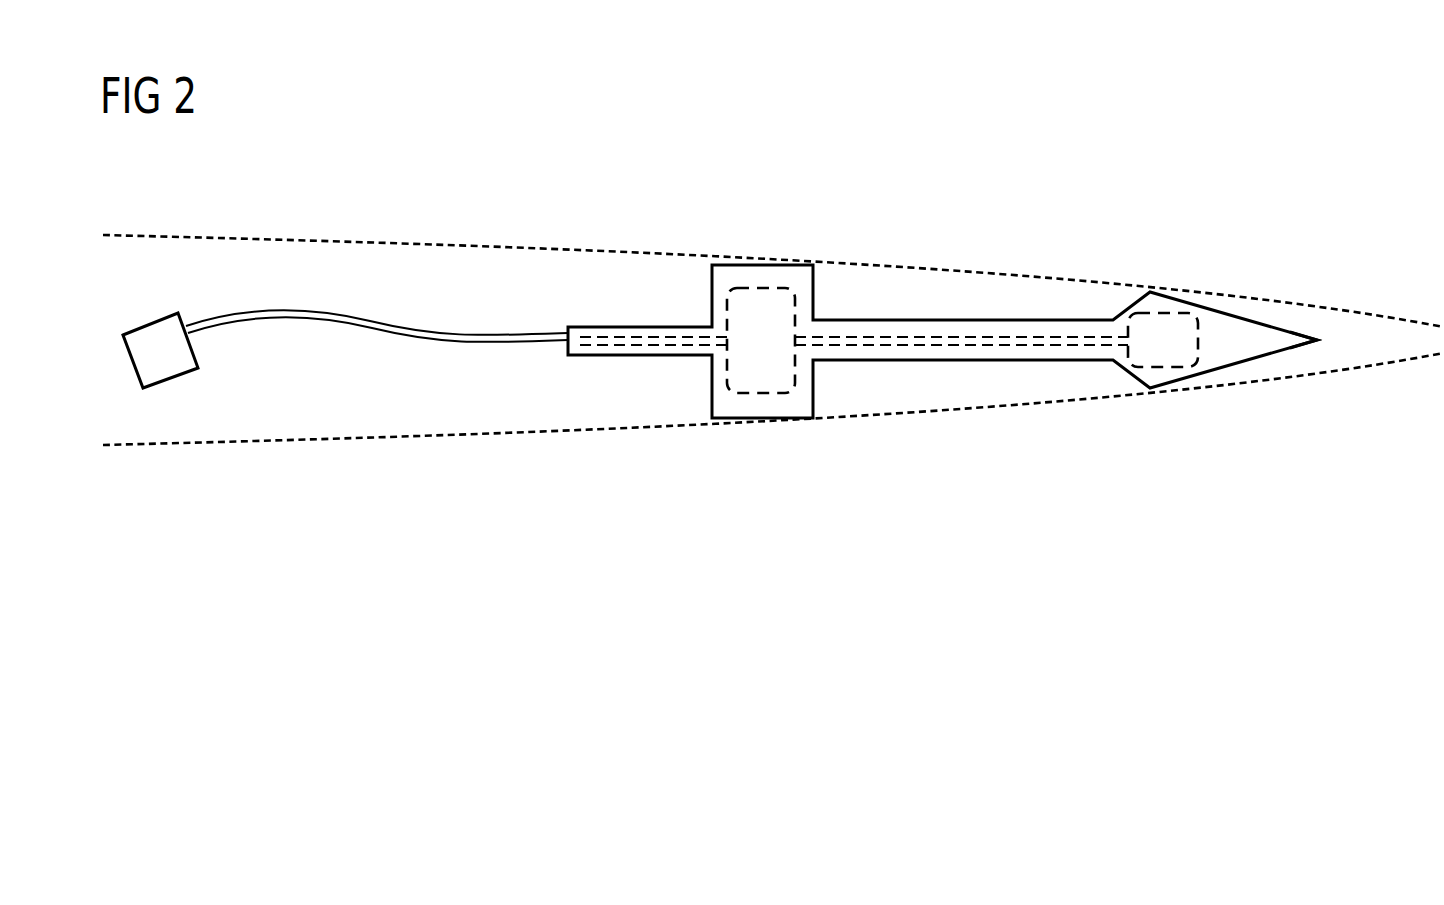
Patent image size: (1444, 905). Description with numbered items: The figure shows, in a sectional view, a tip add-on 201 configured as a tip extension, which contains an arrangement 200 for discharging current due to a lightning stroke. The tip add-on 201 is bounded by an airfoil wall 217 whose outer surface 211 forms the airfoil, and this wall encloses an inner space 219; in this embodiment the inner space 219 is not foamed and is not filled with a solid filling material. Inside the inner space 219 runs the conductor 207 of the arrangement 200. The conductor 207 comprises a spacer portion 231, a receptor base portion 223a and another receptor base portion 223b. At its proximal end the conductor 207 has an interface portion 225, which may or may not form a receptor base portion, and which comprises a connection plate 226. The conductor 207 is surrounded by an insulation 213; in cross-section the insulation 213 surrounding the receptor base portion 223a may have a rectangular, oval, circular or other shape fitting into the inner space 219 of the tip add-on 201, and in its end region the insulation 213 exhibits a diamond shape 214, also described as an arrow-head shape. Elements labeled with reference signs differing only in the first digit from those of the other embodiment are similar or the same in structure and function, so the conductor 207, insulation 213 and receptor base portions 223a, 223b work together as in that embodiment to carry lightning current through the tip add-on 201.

The arrangement 200 is at (603, 403).
The tip add-on 201 is at (1085, 233).
The conductor 207 is at (147, 323).
The outer surface 211 is at (437, 247).
The insulation 213 is at (800, 275).
The diamond shape 214 is at (1323, 325).
The airfoil wall 217 is at (327, 242).
The inner space 219 is at (485, 378).
The receptor base portion 223a is at (743, 287).
The another receptor base portion 223b is at (1168, 313).
The interface portion 225 is at (198, 275).
The connection plate 226 is at (182, 355).
The spacer portion 231 is at (482, 332).